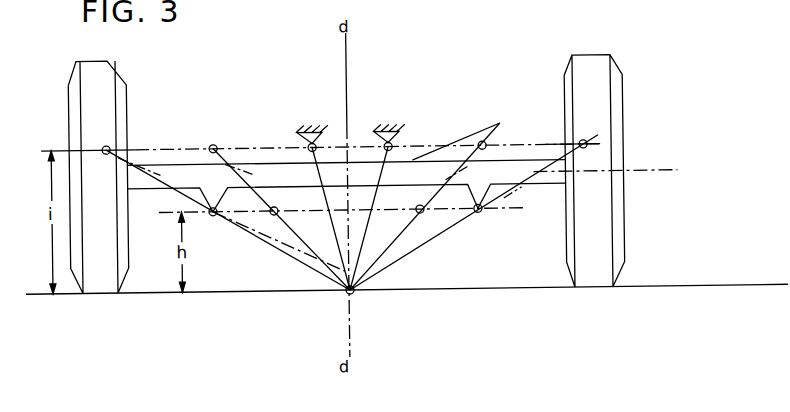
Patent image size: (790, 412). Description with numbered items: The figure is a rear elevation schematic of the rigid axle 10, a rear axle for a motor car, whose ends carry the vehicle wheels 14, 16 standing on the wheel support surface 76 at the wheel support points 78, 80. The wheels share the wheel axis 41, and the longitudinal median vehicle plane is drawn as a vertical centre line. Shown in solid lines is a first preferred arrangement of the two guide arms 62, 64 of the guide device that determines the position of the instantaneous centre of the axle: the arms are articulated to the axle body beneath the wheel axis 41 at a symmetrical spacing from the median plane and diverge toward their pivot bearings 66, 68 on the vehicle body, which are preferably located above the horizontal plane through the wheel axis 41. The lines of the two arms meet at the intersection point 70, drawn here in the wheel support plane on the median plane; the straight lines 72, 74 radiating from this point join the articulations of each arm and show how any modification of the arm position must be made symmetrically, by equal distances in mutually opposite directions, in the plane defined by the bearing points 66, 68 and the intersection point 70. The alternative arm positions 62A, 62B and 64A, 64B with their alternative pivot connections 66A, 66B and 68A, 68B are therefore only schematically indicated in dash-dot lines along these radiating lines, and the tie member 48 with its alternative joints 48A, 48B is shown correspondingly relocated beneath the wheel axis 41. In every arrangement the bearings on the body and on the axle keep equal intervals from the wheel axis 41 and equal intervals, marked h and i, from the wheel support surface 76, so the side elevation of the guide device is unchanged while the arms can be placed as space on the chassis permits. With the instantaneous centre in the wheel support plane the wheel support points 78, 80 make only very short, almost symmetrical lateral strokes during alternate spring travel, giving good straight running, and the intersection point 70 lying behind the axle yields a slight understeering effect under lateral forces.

The rigid axle 10 is at (522, 155).
The vehicle wheel 14 is at (590, 155).
The vehicle wheel 16 is at (106, 79).
The wheel axis 41 is at (642, 172).
The tie rod 48 is at (324, 197).
The tie rod inner pivot 48A is at (278, 205).
The tie rod outer pivot 48B is at (218, 206).
The guide arm 62 is at (311, 166).
The guide arm alternative position 62A is at (257, 175).
The guide arm alternative position 62B is at (161, 172).
The guide arm 64 is at (443, 126).
The guide arm alternative position 64A is at (474, 174).
The guide arm alternative position 64B is at (531, 193).
The pivot bearing 66 is at (308, 147).
The pivot bearing alternative position 66A is at (210, 147).
The pivot bearing alternative position 66B is at (112, 135).
The pivot bearing 68 is at (399, 148).
The pivot bearing alternative position 68A is at (484, 142).
The pivot bearing alternative position 68B is at (588, 137).
The intersection point 70 is at (358, 288).
The straight line 72 is at (285, 237).
The straight line 74 is at (411, 239).
The wheel support surface 76 is at (482, 279).
The wheel support point 78 is at (97, 289).
The wheel support point 80 is at (587, 291).